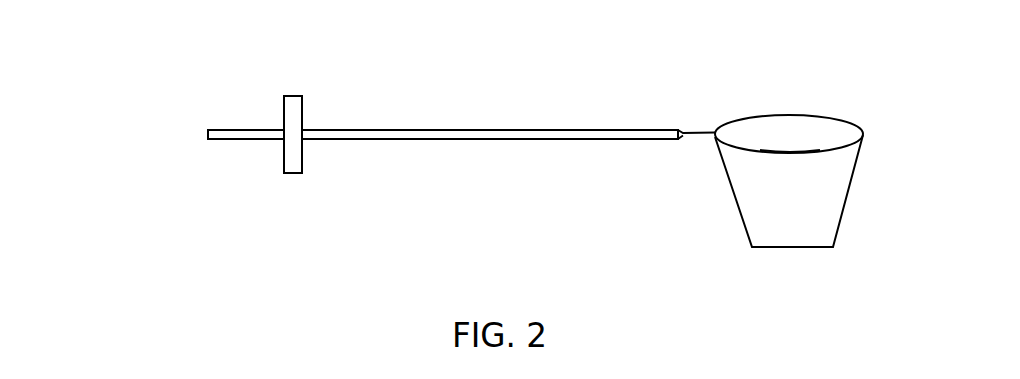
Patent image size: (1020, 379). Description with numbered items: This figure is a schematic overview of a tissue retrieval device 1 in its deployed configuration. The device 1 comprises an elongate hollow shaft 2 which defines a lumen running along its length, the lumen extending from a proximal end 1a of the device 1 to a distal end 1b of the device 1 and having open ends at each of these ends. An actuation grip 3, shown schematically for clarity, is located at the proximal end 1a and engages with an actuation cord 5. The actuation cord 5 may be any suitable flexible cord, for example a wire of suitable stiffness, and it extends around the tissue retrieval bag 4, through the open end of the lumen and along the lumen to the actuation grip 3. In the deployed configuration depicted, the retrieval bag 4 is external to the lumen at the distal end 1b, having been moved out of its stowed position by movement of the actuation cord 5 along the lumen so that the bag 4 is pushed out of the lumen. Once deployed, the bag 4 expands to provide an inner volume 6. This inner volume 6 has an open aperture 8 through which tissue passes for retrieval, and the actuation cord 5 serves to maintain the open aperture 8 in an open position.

The tissue retrieval device 1 is at (158, 98).
The proximal end 1a is at (208, 132).
The distal end 1b is at (673, 139).
The elongate hollow shaft 2 is at (420, 129).
The actuation grip 3 is at (283, 110).
The tissue retrieval bag 4 is at (833, 218).
The actuation cord 5 is at (770, 115).
The inner volume 6 is at (760, 192).
The open aperture 8 is at (815, 128).